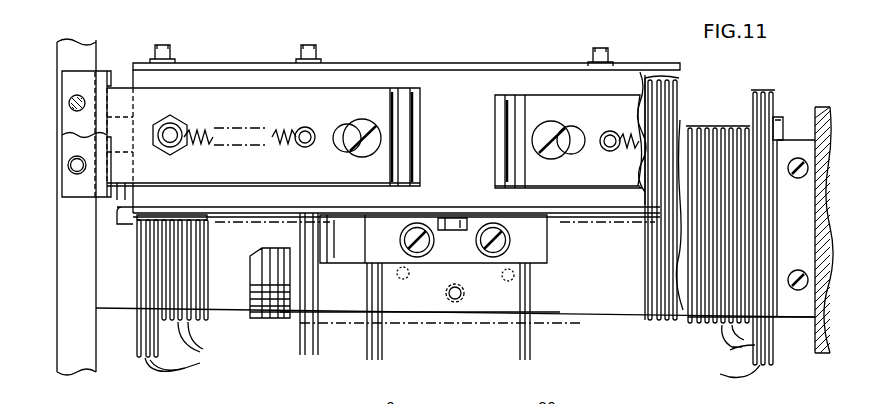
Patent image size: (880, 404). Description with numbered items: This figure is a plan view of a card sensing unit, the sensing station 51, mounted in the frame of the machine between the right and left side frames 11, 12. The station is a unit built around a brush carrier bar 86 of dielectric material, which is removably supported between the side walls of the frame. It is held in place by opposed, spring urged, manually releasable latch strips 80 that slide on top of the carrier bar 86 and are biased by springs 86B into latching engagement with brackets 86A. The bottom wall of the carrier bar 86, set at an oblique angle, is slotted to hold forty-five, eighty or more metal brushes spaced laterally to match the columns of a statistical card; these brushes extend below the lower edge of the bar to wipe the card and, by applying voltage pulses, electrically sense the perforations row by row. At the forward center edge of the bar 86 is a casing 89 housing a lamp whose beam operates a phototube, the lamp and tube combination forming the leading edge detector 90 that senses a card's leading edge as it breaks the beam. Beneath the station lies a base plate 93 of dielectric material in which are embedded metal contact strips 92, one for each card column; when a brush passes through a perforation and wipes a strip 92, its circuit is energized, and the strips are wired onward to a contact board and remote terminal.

The right side frame 11 is at (88, 351).
The left side frame 12 is at (820, 345).
The sensing station 51 is at (480, 61).
The latch strips 80 is at (342, 116).
The brush carrier bar 86 is at (562, 80).
The brackets 86A is at (108, 70).
The springs 86B is at (263, 128).
The casing 89 is at (462, 258).
The leading edge detector 90 is at (437, 268).
The contact strips 92 is at (752, 362).
The base plate 93 is at (478, 298).